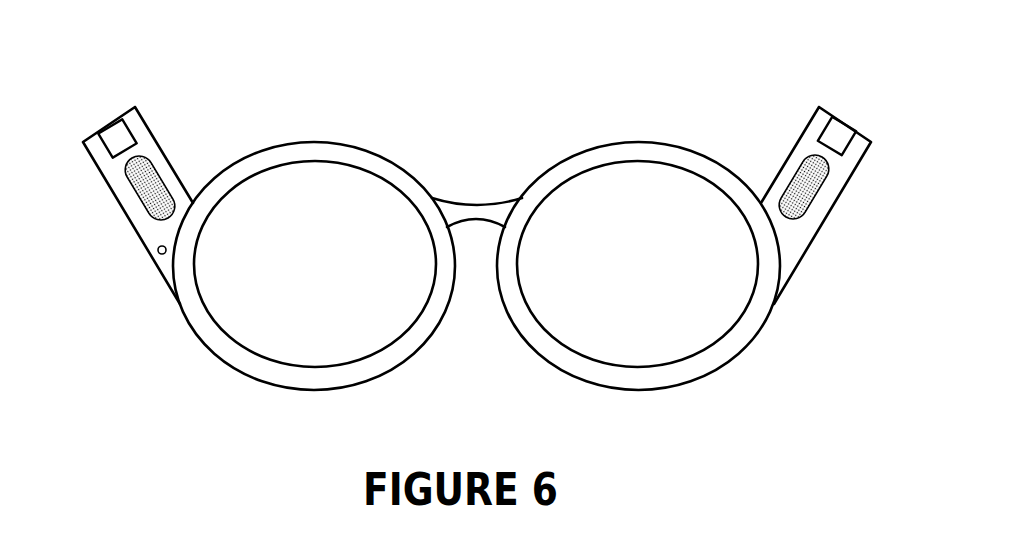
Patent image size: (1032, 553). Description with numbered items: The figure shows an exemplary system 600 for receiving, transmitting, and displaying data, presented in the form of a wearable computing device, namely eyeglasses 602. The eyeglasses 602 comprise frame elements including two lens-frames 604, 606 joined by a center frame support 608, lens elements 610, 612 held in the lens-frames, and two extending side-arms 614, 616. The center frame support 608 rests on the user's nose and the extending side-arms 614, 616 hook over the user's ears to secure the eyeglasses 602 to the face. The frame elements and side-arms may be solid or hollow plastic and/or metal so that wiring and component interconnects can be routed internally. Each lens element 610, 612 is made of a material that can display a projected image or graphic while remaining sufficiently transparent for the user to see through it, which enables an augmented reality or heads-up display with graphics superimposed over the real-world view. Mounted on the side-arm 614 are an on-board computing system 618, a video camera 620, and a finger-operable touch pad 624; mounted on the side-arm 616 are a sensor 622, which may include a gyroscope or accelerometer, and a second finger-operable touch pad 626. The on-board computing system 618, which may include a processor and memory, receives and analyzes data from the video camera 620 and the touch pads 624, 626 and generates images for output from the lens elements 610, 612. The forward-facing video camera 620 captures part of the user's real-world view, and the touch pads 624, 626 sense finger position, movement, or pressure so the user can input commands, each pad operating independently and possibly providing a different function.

The system 600 is at (471, 234).
The eyeglasses 602 is at (476, 216).
The lens-frame 604 is at (288, 141).
The lens-frame 606 is at (613, 141).
The center frame support 608 is at (468, 205).
The lens element 610 is at (252, 325).
The lens element 612 is at (580, 343).
The extending side-arm 614 is at (142, 217).
The extending side-arm 616 is at (806, 205).
The on-board computing system 618 is at (122, 140).
The video camera 620 is at (160, 253).
The sensor 622 is at (840, 133).
The finger-operable touch pad 624 is at (148, 188).
The finger-operable touch pad 626 is at (807, 195).